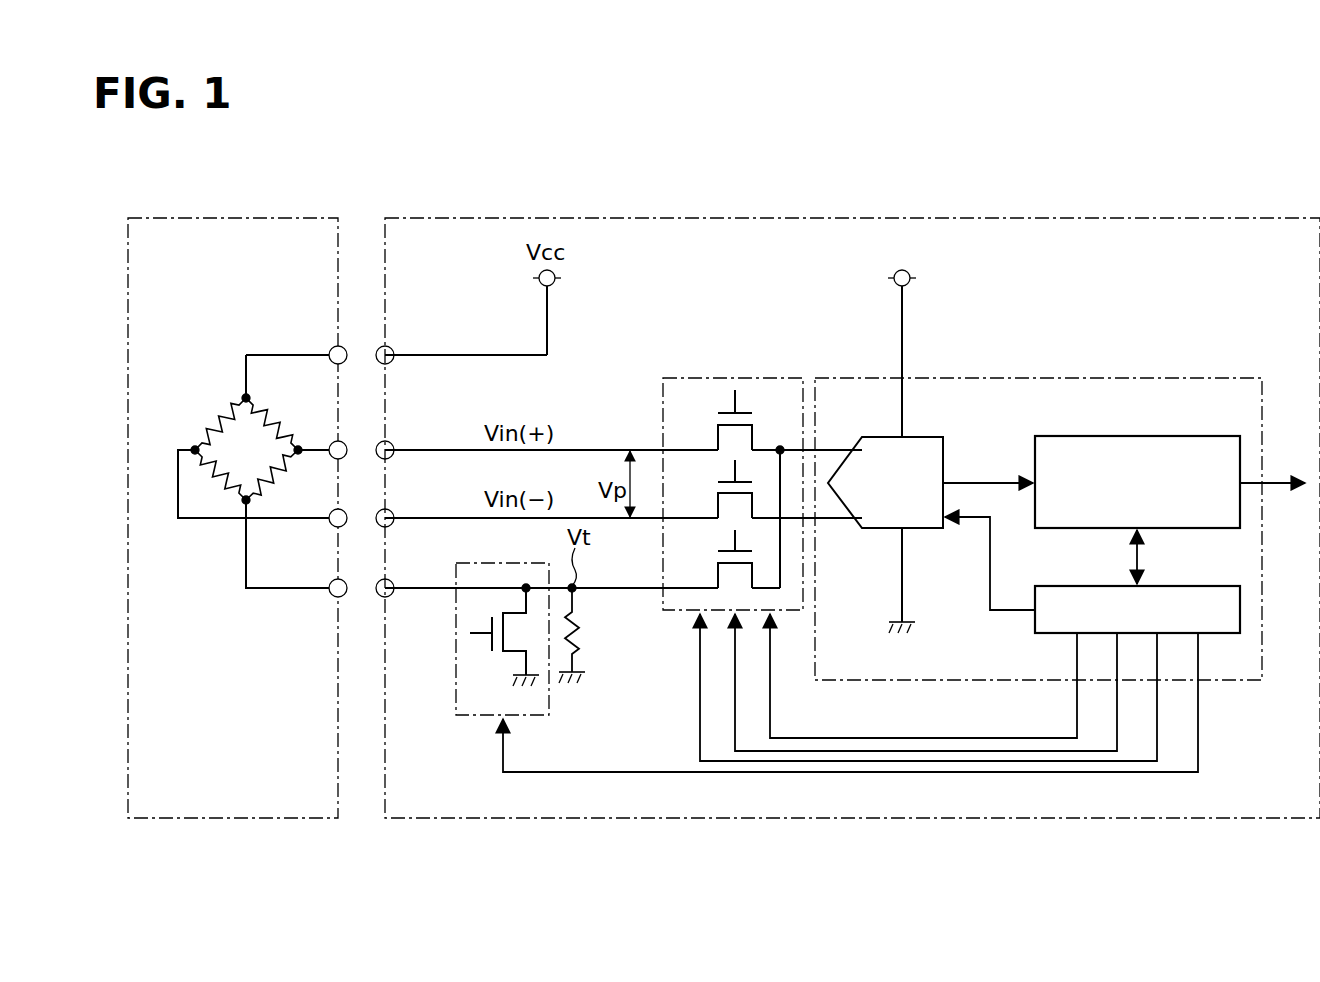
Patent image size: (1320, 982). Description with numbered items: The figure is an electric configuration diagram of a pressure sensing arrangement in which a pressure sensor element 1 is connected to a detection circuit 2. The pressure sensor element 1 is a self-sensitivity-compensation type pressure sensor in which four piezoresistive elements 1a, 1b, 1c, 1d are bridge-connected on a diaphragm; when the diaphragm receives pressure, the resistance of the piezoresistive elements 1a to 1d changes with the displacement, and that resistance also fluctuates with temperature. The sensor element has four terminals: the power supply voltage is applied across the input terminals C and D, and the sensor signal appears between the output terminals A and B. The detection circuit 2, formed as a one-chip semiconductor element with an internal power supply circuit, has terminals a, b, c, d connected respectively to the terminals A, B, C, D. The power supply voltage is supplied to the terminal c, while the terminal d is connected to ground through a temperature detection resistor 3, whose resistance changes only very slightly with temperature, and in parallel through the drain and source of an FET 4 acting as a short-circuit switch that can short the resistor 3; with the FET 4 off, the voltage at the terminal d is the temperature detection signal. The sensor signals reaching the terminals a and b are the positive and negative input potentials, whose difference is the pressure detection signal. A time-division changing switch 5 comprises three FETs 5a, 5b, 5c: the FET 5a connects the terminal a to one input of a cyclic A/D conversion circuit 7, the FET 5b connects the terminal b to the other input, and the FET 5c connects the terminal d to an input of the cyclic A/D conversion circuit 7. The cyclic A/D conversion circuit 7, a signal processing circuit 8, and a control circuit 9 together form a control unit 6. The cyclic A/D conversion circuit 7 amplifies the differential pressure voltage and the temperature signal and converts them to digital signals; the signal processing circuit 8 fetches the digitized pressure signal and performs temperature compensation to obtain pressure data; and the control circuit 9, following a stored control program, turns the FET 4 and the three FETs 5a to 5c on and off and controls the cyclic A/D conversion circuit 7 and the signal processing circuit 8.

The pressure sensor element 1 is at (240, 217).
The piezoresistive element 1a is at (270, 420).
The piezoresistive element 1b is at (216, 422).
The piezoresistive element 1c is at (220, 478).
The piezoresistive element 1d is at (278, 476).
The detection circuit 2 is at (761, 217).
The temperature detection resistor 3 is at (586, 644).
The FET 4 is at (478, 654).
The time-division changing switch 5 is at (727, 376).
The FET 5a is at (761, 408).
The FET 5b is at (716, 497).
The FET 5c is at (701, 603).
The control unit 6 is at (1108, 376).
The cyclic A/D conversion circuit 7 is at (948, 462).
The signal processing circuit 8 is at (1172, 435).
The control circuit 9 is at (1226, 586).
The output terminal A is at (346, 444).
The output terminal B is at (346, 512).
The input terminal C is at (346, 350).
The input terminal D is at (346, 596).
The terminal a is at (395, 445).
The terminal b is at (395, 513).
The terminal c is at (395, 350).
The terminal d is at (393, 596).